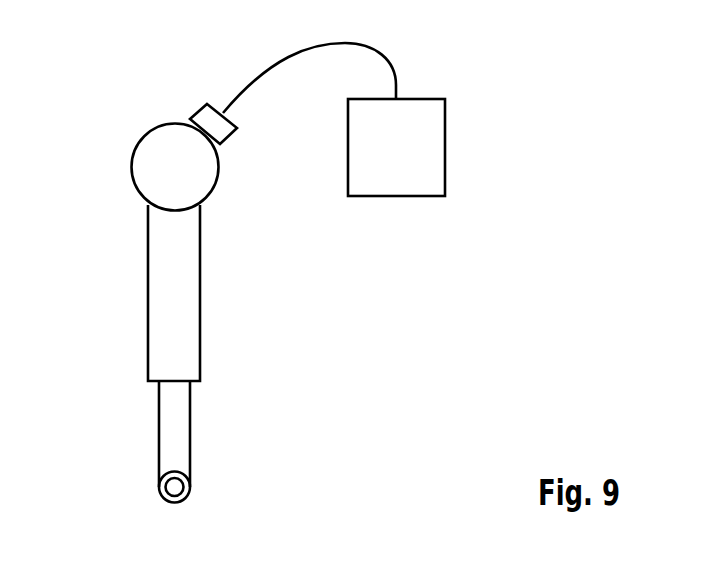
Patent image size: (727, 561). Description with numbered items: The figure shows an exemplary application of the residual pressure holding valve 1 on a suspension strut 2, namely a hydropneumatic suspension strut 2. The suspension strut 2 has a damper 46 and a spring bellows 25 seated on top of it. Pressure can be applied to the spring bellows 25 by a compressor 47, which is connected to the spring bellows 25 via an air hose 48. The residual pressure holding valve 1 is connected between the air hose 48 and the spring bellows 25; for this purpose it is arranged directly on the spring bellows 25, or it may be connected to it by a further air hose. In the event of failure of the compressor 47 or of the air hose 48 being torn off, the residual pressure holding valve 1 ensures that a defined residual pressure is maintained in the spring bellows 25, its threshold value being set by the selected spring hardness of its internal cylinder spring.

The residual pressure holding valve 1 is at (201, 111).
The suspension strut 2 is at (128, 281).
The spring bellows 25 is at (131, 168).
The damper 46 is at (201, 302).
The compressor 47 is at (446, 145).
The air hose 48 is at (264, 70).